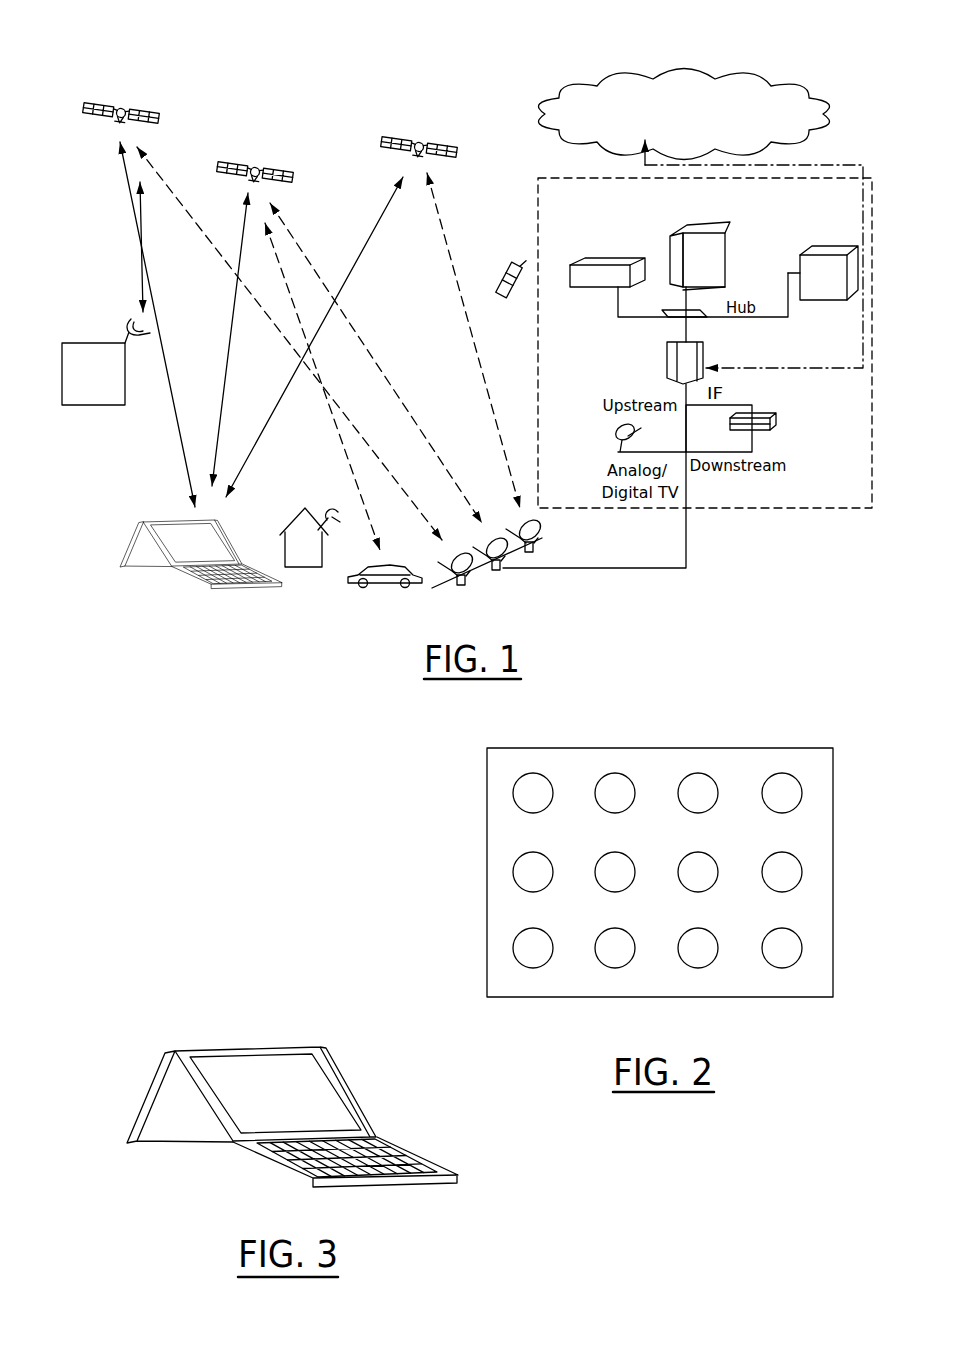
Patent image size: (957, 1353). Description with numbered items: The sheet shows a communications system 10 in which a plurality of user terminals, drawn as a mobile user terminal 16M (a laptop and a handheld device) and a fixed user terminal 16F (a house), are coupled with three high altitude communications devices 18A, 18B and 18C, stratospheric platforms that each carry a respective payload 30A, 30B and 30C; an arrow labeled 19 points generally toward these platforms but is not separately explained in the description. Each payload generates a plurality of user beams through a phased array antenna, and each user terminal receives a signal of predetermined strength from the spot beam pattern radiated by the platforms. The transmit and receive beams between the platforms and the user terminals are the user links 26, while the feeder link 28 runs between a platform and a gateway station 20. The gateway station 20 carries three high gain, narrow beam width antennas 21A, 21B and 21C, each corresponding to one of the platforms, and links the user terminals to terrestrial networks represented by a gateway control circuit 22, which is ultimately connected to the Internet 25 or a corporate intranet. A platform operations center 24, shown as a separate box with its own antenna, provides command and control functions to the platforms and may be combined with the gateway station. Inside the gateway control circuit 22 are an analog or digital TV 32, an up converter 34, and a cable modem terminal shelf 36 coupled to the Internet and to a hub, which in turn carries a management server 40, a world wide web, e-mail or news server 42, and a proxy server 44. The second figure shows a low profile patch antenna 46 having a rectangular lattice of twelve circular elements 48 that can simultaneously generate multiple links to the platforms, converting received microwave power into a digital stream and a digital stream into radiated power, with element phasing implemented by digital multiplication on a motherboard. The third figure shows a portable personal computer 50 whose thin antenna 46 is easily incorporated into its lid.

In FIG. 1, the communications system 10 is at (117, 262).
In FIG. 1, the satellite constellation 19 is at (339, 91).
In FIG. 1, the high altitude communications device 18A is at (150, 112).
In FIG. 1, the high altitude communications device 18B is at (275, 170).
In FIG. 1, the high altitude communications device 18C is at (390, 137).
In FIG. 1, the payload 30A is at (123, 107).
In FIG. 1, the payload 30B is at (256, 165).
In FIG. 1, the payload 30C is at (422, 141).
In FIG. 1, the user links 26 is at (440, 223).
In FIG. 1, the feeder link 28 is at (389, 384).
In FIG. 1, the platform operations center 24 is at (100, 405).
In FIG. 1, the mobile user terminal 16M is at (177, 571).
In FIG. 1, the fixed user terminal 16F is at (308, 565).
In FIG. 1, the gateway station 20 is at (528, 590).
In FIG. 1, the antenna 21A is at (440, 586).
In FIG. 1, the antenna 21B is at (494, 580).
In FIG. 1, the antenna 21C is at (534, 541).
In FIG. 1, the gateway control circuit 22 is at (752, 510).
In FIG. 1, the Internet 25 is at (693, 76).
In FIG. 1, the management server 40 is at (593, 288).
In FIG. 1, the world wide web, e-mail or news server 42 is at (710, 224).
In FIG. 1, the proxy server 44 is at (830, 303).
In FIG. 1, the cable modem terminal shelf 36 is at (668, 357).
In FIG. 1, the analog or digital TV 32 is at (613, 446).
In FIG. 1, the up converter 34 is at (768, 415).
In FIG. 2, the antenna 46 is at (832, 802).
In FIG. 3, the antenna 46 is at (133, 1118).
In FIG. 2, the elements 48 is at (612, 968).
In FIG. 3, the portable personal computer 50 is at (257, 1162).